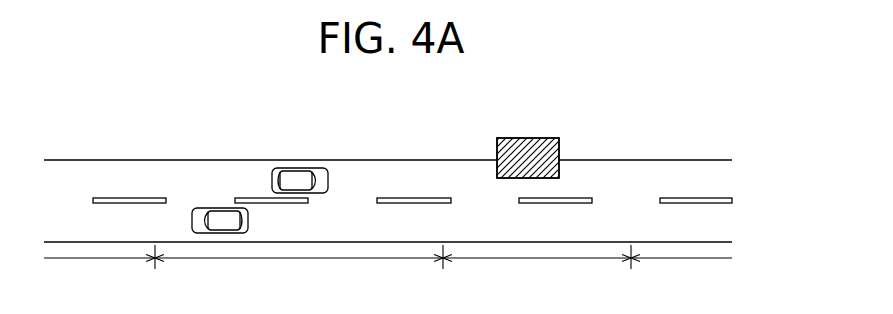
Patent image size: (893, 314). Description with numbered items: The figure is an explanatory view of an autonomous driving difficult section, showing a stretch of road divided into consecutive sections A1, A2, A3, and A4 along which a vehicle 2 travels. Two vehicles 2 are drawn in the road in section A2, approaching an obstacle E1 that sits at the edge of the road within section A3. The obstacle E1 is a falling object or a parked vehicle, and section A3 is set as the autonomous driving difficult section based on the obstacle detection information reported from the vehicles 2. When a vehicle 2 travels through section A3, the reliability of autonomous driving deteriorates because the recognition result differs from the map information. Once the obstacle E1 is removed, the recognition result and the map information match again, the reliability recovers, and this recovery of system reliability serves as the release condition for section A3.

The vehicle 2 is at (294, 168).
The obstacle E1 is at (526, 138).
The section A1 is at (99, 274).
The section A2 is at (299, 274).
The section A3 is at (537, 274).
The section A4 is at (681, 274).